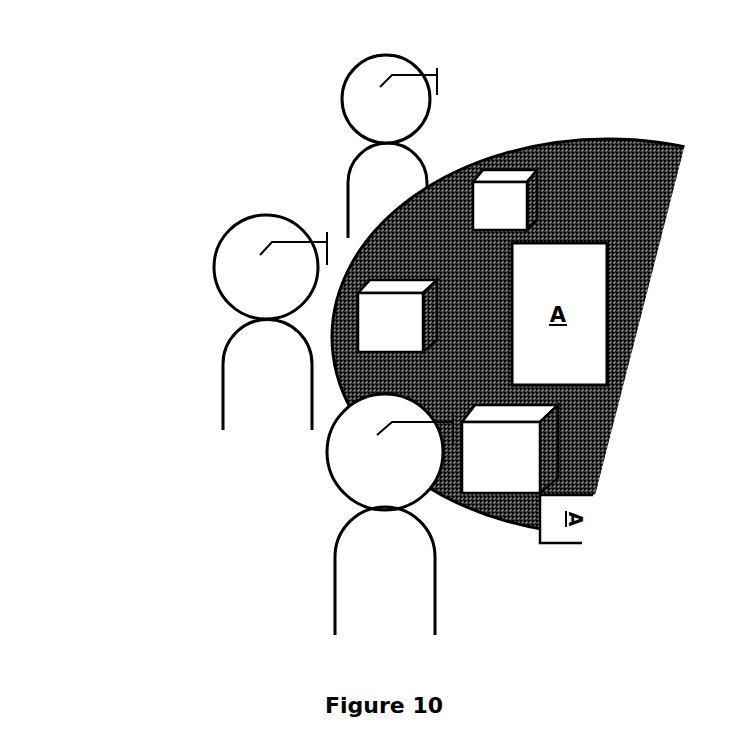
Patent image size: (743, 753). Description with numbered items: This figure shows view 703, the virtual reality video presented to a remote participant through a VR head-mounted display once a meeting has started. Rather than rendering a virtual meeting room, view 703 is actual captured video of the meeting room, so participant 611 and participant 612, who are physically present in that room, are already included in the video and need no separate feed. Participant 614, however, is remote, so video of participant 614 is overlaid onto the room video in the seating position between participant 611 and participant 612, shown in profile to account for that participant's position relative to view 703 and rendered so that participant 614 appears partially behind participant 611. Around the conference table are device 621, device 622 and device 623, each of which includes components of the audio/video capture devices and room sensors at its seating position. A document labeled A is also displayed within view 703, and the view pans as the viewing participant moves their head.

The view 703 is at (80, 83).
The participant 611 is at (365, 566).
The participant 612 is at (365, 190).
The participant 614 is at (248, 372).
The device 621 is at (480, 468).
The device 622 is at (371, 335).
The device 623 is at (482, 216).